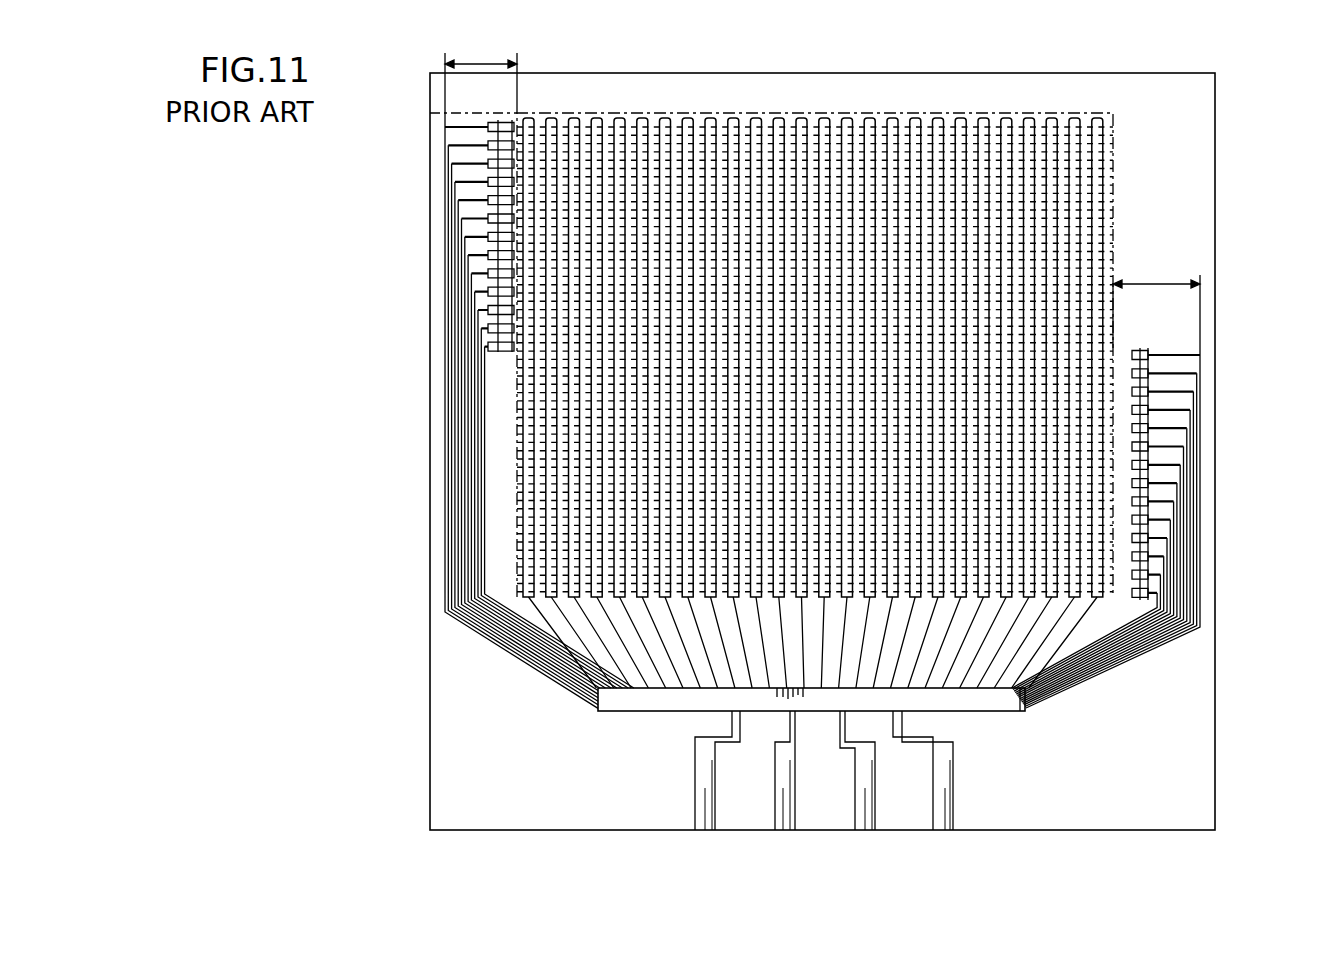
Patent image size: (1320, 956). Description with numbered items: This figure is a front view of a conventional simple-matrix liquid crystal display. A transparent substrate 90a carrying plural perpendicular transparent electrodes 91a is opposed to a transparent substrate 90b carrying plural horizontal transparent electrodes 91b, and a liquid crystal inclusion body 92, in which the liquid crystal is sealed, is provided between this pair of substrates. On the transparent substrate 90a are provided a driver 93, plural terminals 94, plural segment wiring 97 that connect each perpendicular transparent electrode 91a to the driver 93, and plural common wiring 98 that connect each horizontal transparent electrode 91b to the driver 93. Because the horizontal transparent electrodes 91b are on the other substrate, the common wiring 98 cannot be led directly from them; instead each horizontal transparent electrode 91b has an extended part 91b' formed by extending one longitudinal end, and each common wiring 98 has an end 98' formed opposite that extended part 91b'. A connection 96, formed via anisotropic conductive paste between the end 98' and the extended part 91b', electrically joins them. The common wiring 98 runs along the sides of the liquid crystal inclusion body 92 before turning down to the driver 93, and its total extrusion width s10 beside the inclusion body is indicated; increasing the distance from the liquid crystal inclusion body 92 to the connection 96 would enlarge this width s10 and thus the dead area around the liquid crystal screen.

The transparent substrate 90a is at (1200, 100).
The transparent substrate 90b is at (1198, 160).
The perpendicular transparent electrode 91a is at (730, 118).
The horizontal transparent electrode 91b is at (777, 336).
The extended part 91b' is at (1152, 445).
The liquid crystal inclusion body 92 is at (793, 113).
The driver 93 is at (995, 705).
The terminal 94 is at (782, 762).
The connection 96 is at (517, 113).
The segment wiring 97 is at (705, 668).
The common wiring 98 is at (784, 426).
The end of common wiring 98' is at (817, 360).
The total extrusion width s10 is at (822, 163).